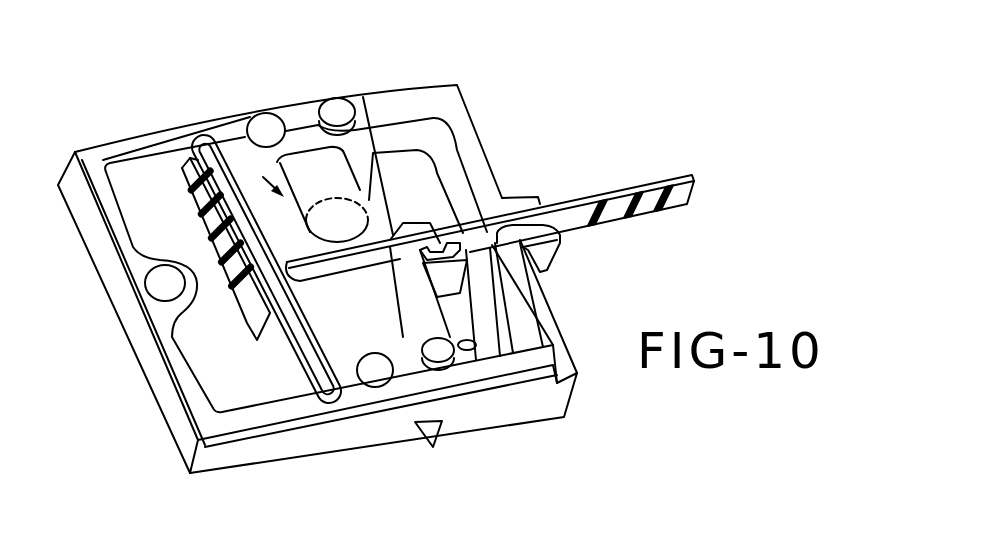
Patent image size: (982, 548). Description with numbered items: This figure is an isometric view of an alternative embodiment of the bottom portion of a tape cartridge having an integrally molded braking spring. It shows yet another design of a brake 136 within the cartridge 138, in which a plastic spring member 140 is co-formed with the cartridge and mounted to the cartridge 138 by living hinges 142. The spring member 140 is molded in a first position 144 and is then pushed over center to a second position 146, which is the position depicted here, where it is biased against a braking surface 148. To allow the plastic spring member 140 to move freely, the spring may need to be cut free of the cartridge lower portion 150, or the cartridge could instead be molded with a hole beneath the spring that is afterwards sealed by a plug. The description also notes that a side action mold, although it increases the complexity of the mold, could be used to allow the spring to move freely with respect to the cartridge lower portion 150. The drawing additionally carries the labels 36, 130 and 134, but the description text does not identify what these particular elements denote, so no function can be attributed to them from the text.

The flexible circuit / contact strip 36 is at (640, 208).
The connector assembly 130 is at (562, 6).
The connector housing 134 is at (657, 8).
The brake 136 is at (310, 238).
The cartridge 138 is at (102, 155).
The plastic spring member 140 is at (322, 253).
The living hinges 142 is at (187, 150).
The first position 144 is at (300, 195).
The second position 146 is at (330, 243).
The braking surface 148 is at (333, 240).
The cartridge lower portion 150 is at (543, 423).